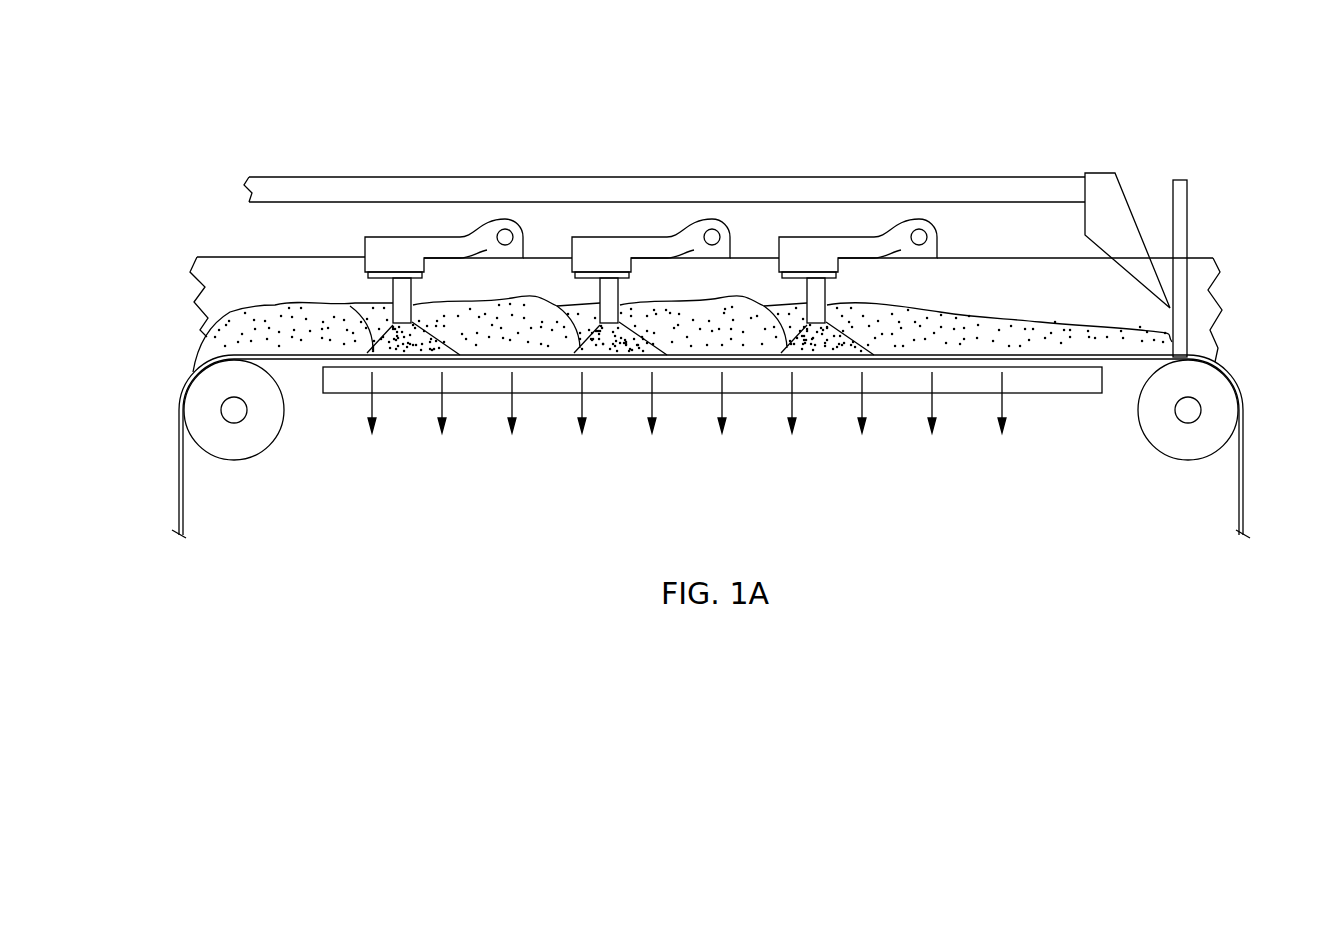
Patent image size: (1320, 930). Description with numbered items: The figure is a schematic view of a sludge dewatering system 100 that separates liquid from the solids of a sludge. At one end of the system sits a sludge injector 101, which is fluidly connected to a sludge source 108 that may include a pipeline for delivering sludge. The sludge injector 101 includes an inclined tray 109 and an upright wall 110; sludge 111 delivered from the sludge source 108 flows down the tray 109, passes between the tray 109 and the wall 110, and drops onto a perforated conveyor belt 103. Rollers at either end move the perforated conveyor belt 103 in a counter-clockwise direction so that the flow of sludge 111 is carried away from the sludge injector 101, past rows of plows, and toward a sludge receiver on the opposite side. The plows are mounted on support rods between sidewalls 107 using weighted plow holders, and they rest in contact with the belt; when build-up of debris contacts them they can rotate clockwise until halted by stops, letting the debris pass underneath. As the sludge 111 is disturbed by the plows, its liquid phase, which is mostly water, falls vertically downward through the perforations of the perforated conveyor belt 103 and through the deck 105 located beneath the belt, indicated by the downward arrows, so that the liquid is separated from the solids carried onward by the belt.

The sludge dewatering system 100 is at (1207, 80).
The sludge injector 101 is at (1143, 188).
The perforated conveyor belt 103 is at (180, 488).
The deck 105 is at (1072, 375).
The sidewalls 107 is at (233, 277).
The sludge source 108 is at (1025, 185).
The tray 109 is at (1098, 180).
The wall 110 is at (1183, 215).
The sludge 111 is at (1000, 332).